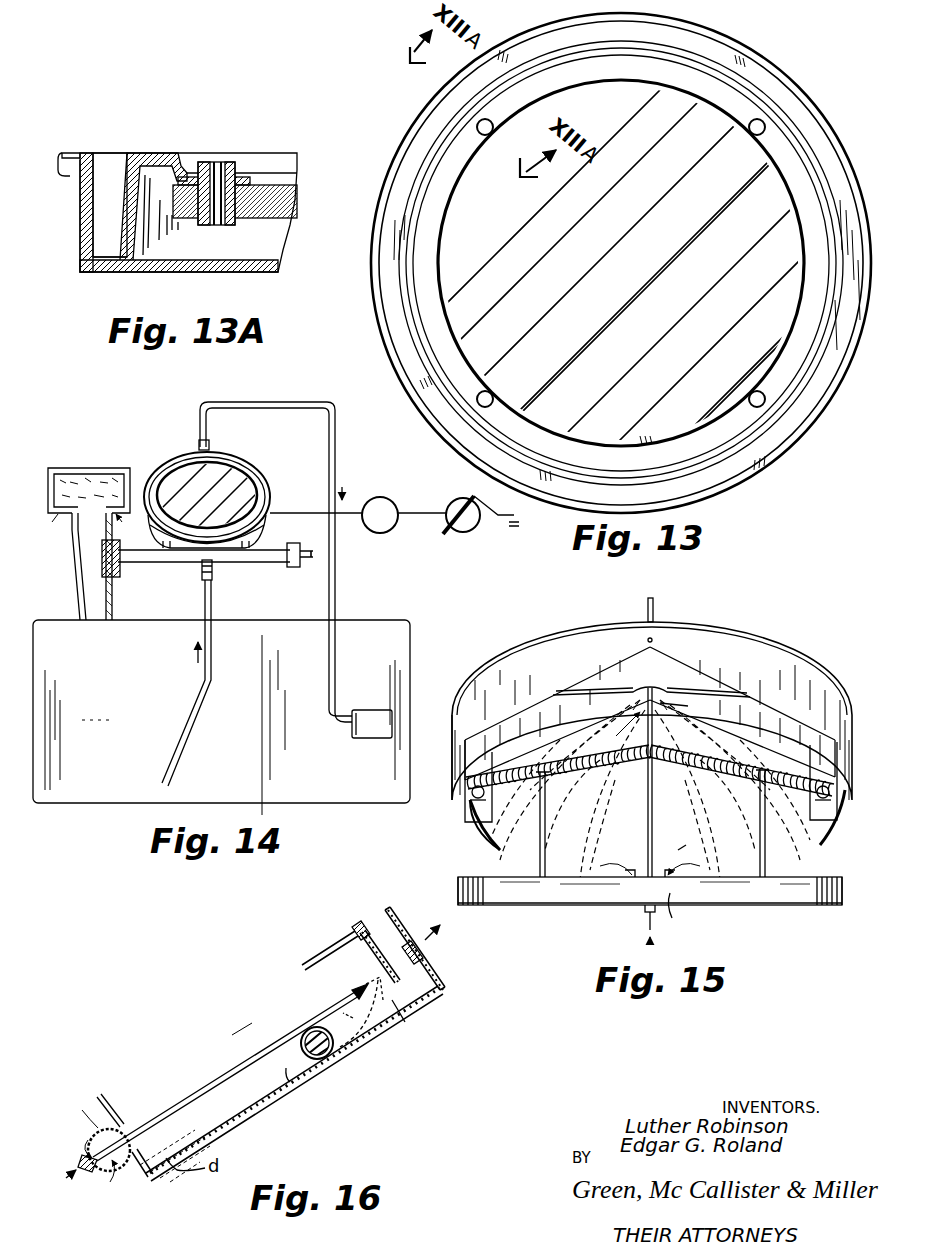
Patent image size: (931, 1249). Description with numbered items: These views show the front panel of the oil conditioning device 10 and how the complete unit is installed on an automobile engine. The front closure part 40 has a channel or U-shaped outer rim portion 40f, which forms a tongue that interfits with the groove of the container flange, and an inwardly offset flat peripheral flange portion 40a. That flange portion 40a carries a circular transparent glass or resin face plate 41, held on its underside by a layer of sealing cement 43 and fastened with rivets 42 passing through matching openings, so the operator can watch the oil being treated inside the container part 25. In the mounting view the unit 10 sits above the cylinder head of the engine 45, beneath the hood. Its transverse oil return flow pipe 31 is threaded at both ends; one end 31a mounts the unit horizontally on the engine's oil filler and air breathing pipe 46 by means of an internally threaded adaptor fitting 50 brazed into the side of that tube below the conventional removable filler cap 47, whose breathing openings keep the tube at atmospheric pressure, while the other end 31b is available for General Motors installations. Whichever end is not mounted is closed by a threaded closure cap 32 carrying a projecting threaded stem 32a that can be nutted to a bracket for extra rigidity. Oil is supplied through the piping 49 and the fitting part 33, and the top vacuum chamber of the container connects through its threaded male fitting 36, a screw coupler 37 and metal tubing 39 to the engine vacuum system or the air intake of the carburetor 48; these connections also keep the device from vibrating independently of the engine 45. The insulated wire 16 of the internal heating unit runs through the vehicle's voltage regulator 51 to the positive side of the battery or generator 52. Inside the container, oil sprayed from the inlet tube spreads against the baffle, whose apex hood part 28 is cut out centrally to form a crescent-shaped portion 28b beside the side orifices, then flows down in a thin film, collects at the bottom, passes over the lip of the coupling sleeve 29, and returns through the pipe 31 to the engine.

In FIG. 14, the device 10 is at (180, 462).
In FIG. 16, the device 10 is at (186, 1084).
In FIG. 14, the insulated wire 16 is at (355, 522).
In FIG. 14, the container part 25 is at (270, 520).
In FIG. 15, the apex hood part 28 is at (685, 682).
In FIG. 16, the apex hood part 28 is at (350, 935).
In FIG. 15, the crescent-shaped portion 28b is at (640, 688).
In FIG. 15, the coupling sleeve 29 is at (658, 894).
In FIG. 16, the coupling sleeve 29 is at (115, 1122).
In FIG. 14, the oil return flow pipe member 31 is at (266, 563).
In FIG. 15, the oil return flow pipe member 31 is at (565, 904).
In FIG. 16, the oil return flow pipe member 31 is at (93, 1133).
In FIG. 15, the threaded end 31a is at (472, 906).
In FIG. 15, the other threaded end 31b is at (818, 906).
In FIG. 14, the closure cap 32 is at (294, 568).
In FIG. 14, the threaded stem 32a is at (313, 556).
In FIG. 16, the fitting part 33 is at (80, 1158).
In FIG. 16, the negative pressure fitting part 36 is at (422, 956).
In FIG. 14, the screw coupler part 37 is at (210, 452).
In FIG. 14, the metal tubing 39 is at (327, 432).
In FIG. 15, the metal tubing 39 is at (655, 610).
In FIG. 13, the front closure part 40 is at (372, 302).
In FIG. 13A, the front closure part 40 is at (80, 216).
In FIG. 13, the peripheral flange portion 40a is at (441, 326).
In FIG. 13A, the peripheral flange portion 40a is at (245, 176).
In FIG. 13A, the outer flange portion 40f is at (100, 272).
In FIG. 13, the face plate window member 41 is at (755, 366).
In FIG. 13A, the face plate window member 41 is at (296, 206).
In FIG. 14, the face plate window member 41 is at (242, 481).
In FIG. 13, the rivets 42 is at (750, 133).
In FIG. 13A, the rivets 42 is at (232, 162).
In FIG. 13A, the sealing cement layer 43 is at (253, 179).
In FIG. 14, the engine 45 is at (370, 620).
In FIG. 14, the oil filler and air breathing pipe 46 is at (72, 574).
In FIG. 14, the removable filler cap 47 is at (100, 468).
In FIG. 14, the carburetor 48 is at (360, 738).
In FIG. 14, the piping 49 is at (186, 740).
In FIG. 15, the piping 49 is at (644, 912).
In FIG. 14, the adaptor fitting 50 is at (121, 570).
In FIG. 14, the voltage regulator 51 is at (392, 532).
In FIG. 14, the generator 52 is at (480, 532).